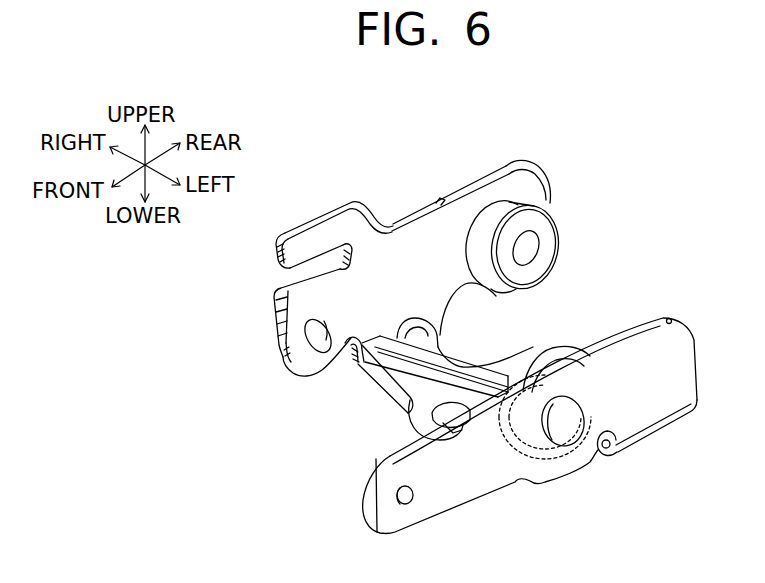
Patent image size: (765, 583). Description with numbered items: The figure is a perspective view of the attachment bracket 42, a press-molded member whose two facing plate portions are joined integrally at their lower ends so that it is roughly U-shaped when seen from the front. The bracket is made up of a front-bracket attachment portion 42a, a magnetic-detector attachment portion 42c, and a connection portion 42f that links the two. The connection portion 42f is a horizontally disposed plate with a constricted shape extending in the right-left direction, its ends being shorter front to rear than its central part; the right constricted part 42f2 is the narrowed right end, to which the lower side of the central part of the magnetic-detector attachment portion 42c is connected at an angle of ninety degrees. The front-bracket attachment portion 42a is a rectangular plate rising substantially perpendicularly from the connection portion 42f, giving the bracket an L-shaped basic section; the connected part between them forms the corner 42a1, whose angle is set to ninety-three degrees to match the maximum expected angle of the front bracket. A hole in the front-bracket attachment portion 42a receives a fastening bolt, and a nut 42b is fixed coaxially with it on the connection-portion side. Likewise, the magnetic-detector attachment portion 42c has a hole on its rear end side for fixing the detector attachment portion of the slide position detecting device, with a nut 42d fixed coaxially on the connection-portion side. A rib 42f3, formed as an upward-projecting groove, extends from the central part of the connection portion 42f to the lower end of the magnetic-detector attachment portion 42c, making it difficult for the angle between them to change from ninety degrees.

The attachment bracket 42 is at (343, 173).
The magnetic-detector attachment portion 42c is at (412, 210).
The nut 42d is at (548, 237).
The nut 42b is at (543, 357).
The rib 42f3 is at (452, 362).
The right constricted part 42f2 is at (373, 373).
The connection portion 42f is at (377, 400).
The front-bracket attachment portion 42a is at (615, 332).
The corner 42a1 is at (655, 437).